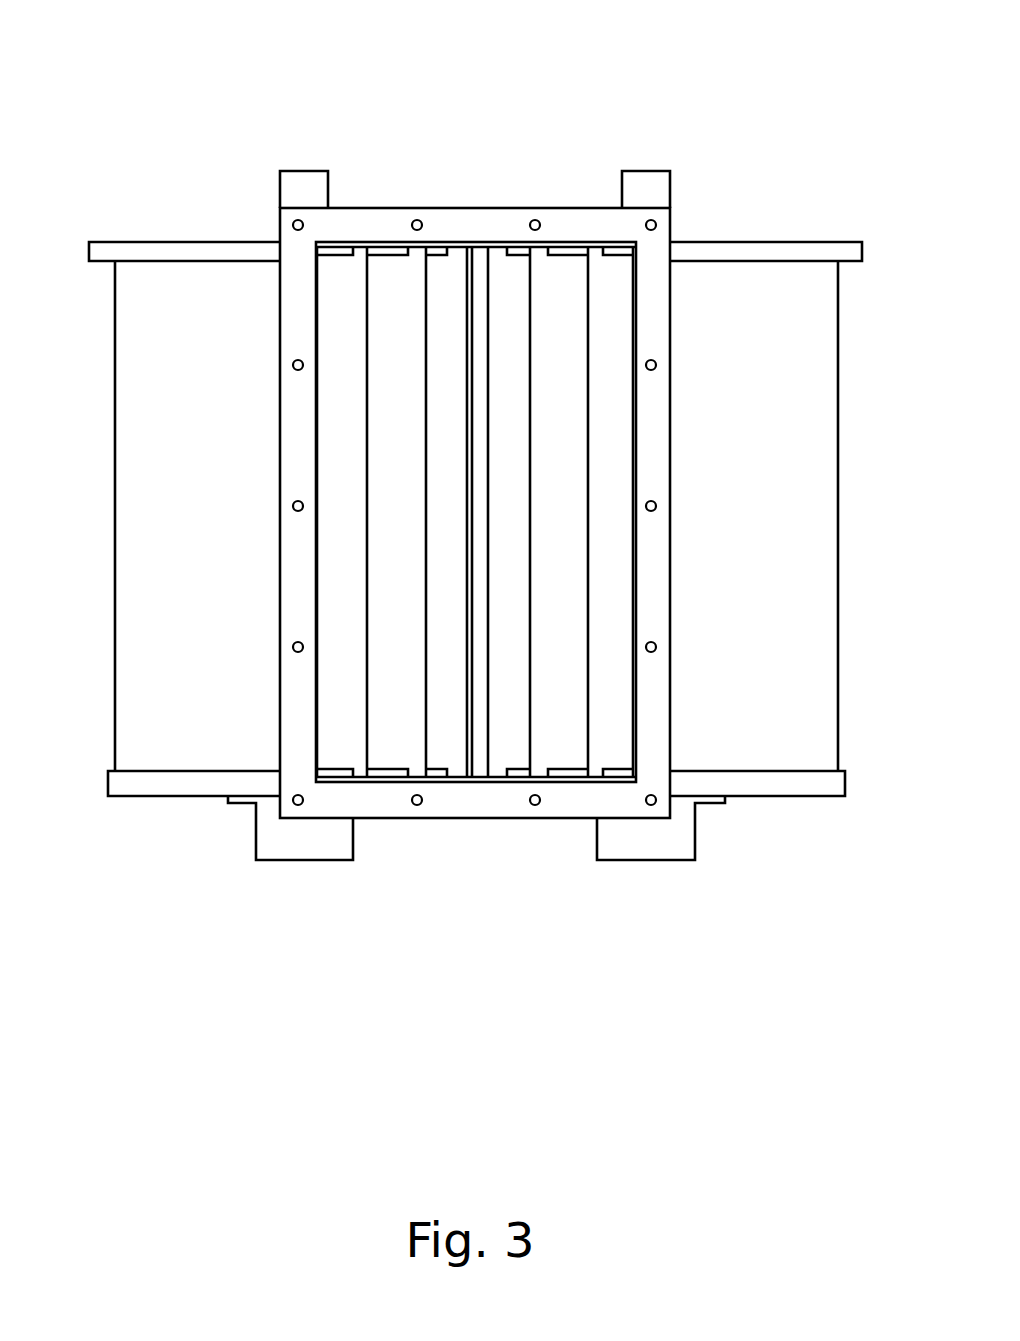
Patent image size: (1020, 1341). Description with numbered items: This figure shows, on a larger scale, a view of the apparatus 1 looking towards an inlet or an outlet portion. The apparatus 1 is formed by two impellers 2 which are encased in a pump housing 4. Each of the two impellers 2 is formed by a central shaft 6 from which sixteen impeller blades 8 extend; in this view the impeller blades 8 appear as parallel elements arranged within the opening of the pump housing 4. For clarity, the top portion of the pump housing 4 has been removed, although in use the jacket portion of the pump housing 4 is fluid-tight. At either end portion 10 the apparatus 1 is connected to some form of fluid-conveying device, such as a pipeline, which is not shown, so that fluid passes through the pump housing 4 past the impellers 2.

The apparatus 1 is at (205, 1035).
The impellers 2 is at (396, 772).
The pump housing 4 is at (738, 723).
The central shaft 6 is at (294, 171).
The impeller blades 8 is at (557, 310).
The end portion 10 is at (298, 713).